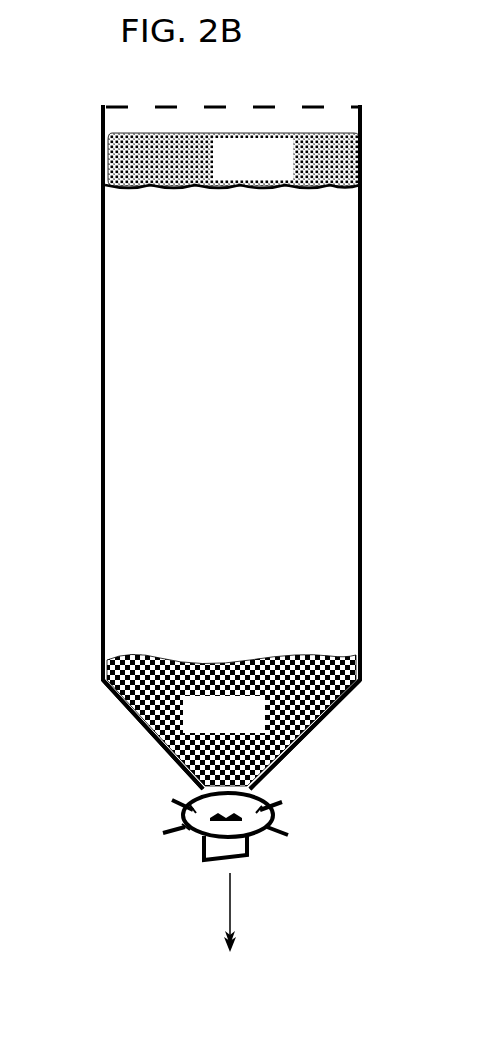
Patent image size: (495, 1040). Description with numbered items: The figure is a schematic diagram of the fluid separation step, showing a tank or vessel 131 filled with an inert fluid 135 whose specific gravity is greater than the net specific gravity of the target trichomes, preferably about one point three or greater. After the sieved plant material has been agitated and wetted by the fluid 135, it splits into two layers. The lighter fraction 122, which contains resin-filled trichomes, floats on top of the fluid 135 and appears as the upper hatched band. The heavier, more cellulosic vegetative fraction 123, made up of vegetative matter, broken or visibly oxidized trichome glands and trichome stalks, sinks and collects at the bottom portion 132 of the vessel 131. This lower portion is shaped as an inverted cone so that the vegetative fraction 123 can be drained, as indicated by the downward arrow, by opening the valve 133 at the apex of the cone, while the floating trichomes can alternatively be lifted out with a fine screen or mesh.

The lighter fraction 122 is at (265, 171).
The vegetative fraction 123 is at (237, 727).
The vessel 131 is at (102, 483).
The bottom portion 132 is at (287, 755).
The valve 133 is at (198, 847).
The inert fluid 135 is at (259, 429).